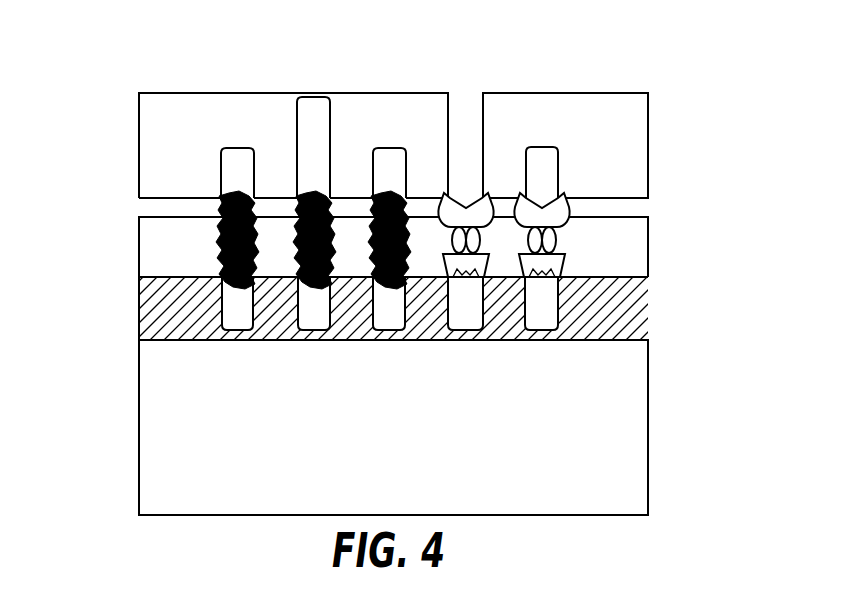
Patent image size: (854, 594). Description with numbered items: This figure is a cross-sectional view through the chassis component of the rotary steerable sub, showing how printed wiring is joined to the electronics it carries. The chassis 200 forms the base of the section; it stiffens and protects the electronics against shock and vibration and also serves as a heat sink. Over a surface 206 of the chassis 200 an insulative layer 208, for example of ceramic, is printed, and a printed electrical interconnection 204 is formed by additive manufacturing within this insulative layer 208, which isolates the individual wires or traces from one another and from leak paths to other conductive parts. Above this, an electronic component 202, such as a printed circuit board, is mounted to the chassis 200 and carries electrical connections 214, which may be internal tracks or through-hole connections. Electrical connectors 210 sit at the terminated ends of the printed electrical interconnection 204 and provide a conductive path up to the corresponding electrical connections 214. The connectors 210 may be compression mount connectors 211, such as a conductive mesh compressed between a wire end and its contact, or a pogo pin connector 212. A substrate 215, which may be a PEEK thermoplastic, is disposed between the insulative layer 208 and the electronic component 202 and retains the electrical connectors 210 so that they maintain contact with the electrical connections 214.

The chassis 200 is at (632, 375).
The electronic component 202 is at (630, 112).
The printed electrical interconnection 204 is at (217, 325).
The surface 206 is at (640, 327).
The insulative layer 208 is at (157, 326).
The electrical connector 210 is at (217, 250).
The compression mount connector 211 is at (217, 262).
The pogo pin connector 212 is at (553, 242).
The electrical connection 214 is at (465, 113).
The substrate 215 is at (643, 268).